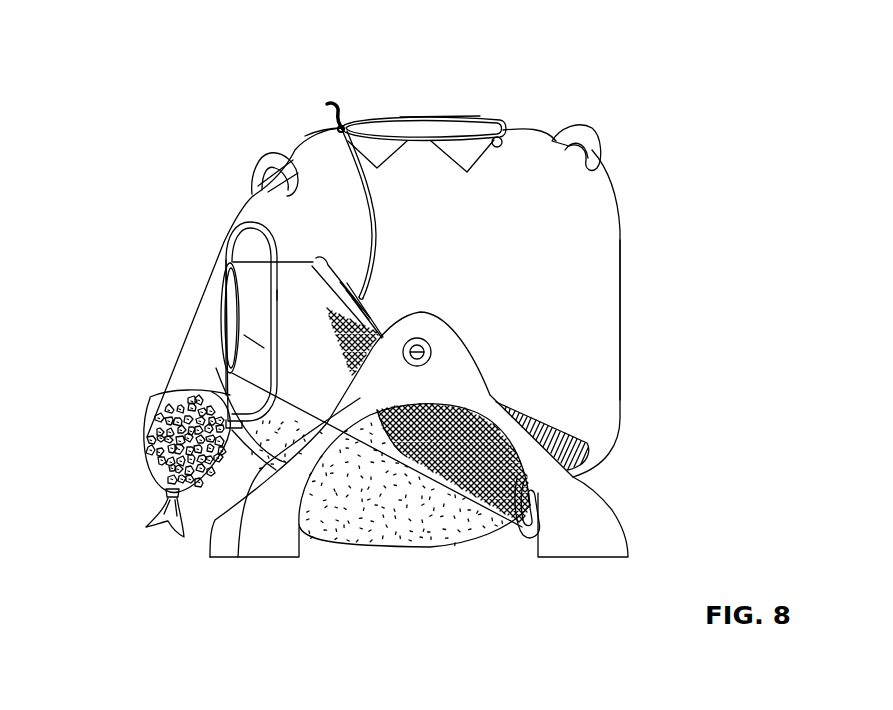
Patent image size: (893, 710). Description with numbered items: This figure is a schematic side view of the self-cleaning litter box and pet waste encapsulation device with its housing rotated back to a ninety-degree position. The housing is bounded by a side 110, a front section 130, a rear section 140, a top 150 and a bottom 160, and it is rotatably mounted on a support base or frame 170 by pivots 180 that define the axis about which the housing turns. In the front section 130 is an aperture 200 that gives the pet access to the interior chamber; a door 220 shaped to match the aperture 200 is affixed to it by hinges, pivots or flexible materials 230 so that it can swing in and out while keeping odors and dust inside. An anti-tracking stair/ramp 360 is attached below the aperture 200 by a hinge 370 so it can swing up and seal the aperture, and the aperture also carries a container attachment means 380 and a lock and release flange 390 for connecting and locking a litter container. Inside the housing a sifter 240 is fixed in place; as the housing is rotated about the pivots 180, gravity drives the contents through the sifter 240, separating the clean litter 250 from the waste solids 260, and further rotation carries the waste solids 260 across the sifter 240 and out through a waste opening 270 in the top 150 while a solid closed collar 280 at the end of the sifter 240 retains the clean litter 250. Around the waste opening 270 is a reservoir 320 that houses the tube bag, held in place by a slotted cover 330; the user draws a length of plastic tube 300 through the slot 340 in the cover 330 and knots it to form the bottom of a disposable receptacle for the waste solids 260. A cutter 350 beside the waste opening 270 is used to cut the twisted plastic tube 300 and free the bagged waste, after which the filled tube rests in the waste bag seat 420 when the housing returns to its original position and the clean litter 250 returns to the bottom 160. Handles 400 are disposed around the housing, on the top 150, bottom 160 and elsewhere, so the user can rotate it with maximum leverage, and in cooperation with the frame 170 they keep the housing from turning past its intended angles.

The side 110 is at (522, 287).
The front section 130 is at (317, 127).
The rear section 140 is at (413, 550).
The top 150 is at (192, 273).
The bottom 160 is at (620, 315).
The support base or frame 170 is at (449, 397).
The pivots 180 is at (427, 350).
The aperture 200 is at (417, 130).
The door 220 is at (376, 232).
The hinges, pivots, or flexible materials 230 is at (340, 133).
The sifter 240 is at (462, 535).
The clean litter 250 is at (363, 527).
The waste solids 260 is at (157, 472).
The waste opening 270 is at (223, 340).
The solid closed collar 280 is at (327, 369).
The plastic tube 300 is at (147, 450).
The reservoir 320 is at (278, 297).
The slotted cover 330 is at (253, 342).
The slot 340 is at (237, 267).
The cutter 350 is at (183, 390).
The anti-tracking stair/ramp 360 is at (467, 160).
The hinge 370 is at (507, 141).
The container attachment means 380 is at (447, 119).
The lock and release flange 390 is at (333, 103).
The handles 400 is at (263, 157).
The waste bag seat 420 is at (238, 557).